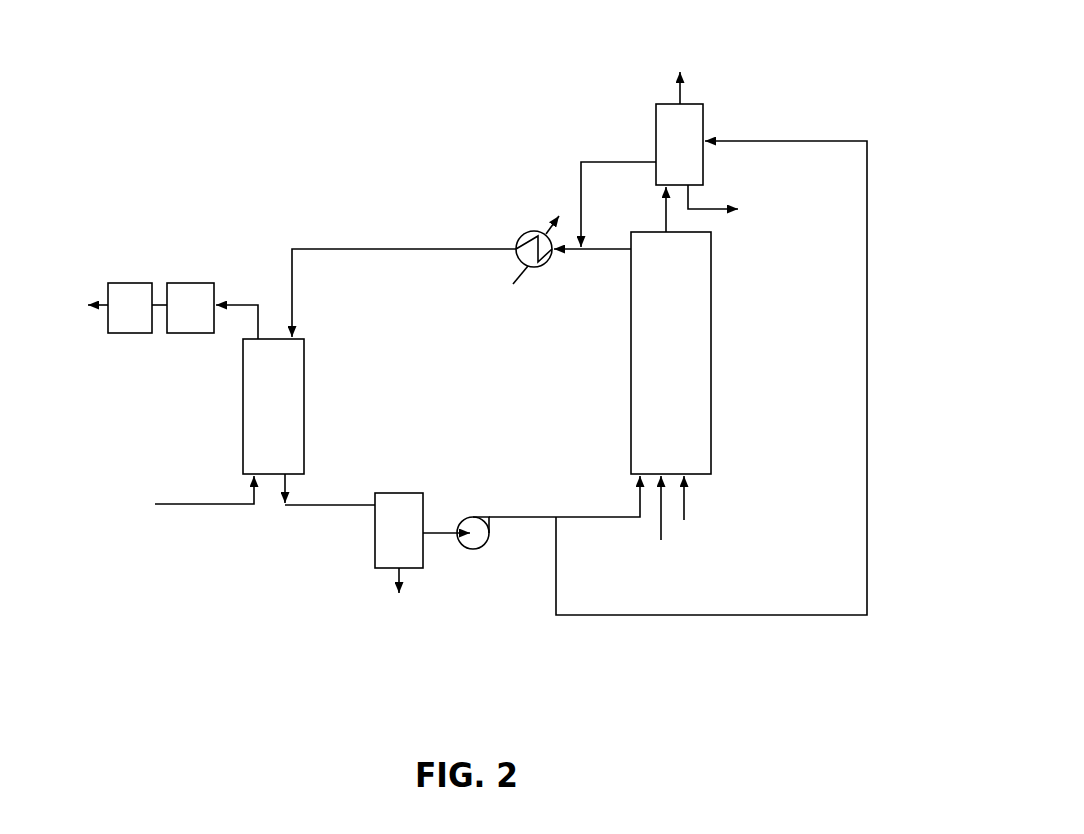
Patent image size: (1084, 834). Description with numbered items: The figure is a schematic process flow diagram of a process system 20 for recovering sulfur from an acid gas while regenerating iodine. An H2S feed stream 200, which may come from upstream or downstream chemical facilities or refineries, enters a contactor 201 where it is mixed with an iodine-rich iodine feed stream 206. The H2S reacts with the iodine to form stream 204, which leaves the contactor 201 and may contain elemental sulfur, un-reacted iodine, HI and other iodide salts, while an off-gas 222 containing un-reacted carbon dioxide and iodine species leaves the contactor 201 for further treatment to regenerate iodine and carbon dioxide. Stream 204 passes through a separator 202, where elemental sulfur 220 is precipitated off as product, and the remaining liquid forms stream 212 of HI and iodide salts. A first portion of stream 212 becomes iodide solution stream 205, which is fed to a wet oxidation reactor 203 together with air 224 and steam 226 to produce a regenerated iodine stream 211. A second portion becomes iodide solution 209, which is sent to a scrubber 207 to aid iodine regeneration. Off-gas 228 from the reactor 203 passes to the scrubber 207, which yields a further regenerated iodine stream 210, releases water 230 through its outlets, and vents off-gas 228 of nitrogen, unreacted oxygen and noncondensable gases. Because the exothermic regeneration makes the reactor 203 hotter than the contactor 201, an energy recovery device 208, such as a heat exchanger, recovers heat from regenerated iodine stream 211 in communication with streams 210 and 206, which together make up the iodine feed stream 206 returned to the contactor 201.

The process system 20 is at (250, 694).
The H2S feed stream 200 is at (189, 508).
The contactor 201 is at (263, 408).
The separator 202 is at (378, 563).
The reactor 203 is at (686, 348).
The stream 204 is at (338, 503).
The iodide solution stream 205 is at (598, 515).
The iodine feed stream 206 is at (362, 245).
The scrubber 207 is at (708, 122).
The energy recovery device 208 is at (522, 232).
The iodide solution 209 is at (871, 383).
The regenerated iodine stream 210 is at (598, 157).
The regenerated iodine stream 211 is at (609, 255).
The stream 212 is at (525, 505).
The elemental sulfur 220 is at (415, 608).
The off-gas 222 is at (240, 293).
The air 224 is at (706, 515).
The steam 226 is at (662, 534).
The off-gas 228 is at (676, 56).
The water 230 is at (755, 222).